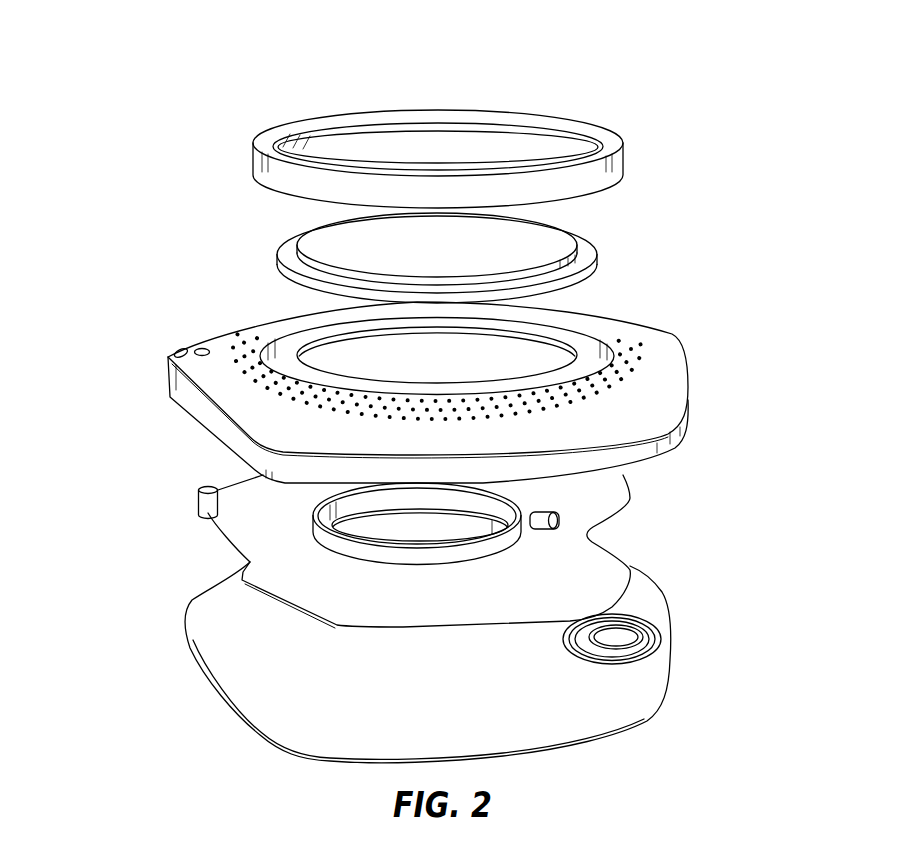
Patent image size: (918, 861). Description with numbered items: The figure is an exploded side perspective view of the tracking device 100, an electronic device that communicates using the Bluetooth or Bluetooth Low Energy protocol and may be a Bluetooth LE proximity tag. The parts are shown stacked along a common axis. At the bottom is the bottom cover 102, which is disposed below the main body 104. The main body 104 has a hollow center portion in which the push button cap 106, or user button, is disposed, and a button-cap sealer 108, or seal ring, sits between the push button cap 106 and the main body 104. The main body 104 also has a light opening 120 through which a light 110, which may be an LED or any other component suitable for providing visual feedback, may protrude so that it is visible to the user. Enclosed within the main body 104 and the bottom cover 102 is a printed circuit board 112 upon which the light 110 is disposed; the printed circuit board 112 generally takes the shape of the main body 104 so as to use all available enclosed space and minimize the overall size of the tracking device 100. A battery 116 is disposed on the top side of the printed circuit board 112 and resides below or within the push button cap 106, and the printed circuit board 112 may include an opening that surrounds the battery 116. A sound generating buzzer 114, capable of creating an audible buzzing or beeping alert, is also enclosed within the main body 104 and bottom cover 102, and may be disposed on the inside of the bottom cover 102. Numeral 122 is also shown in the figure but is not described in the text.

The tracking device 100 is at (760, 76).
The bottom cover 102 is at (223, 665).
The main body 104 is at (197, 408).
The push button cap 106 is at (277, 257).
The button-cap sealer 108 is at (270, 140).
The light 110 is at (200, 498).
The printed circuit board 112 is at (253, 577).
The sound generating buzzer 114 is at (660, 635).
The battery 116 is at (493, 504).
The light opening 120 is at (220, 342).
The aperture 122 is at (176, 349).